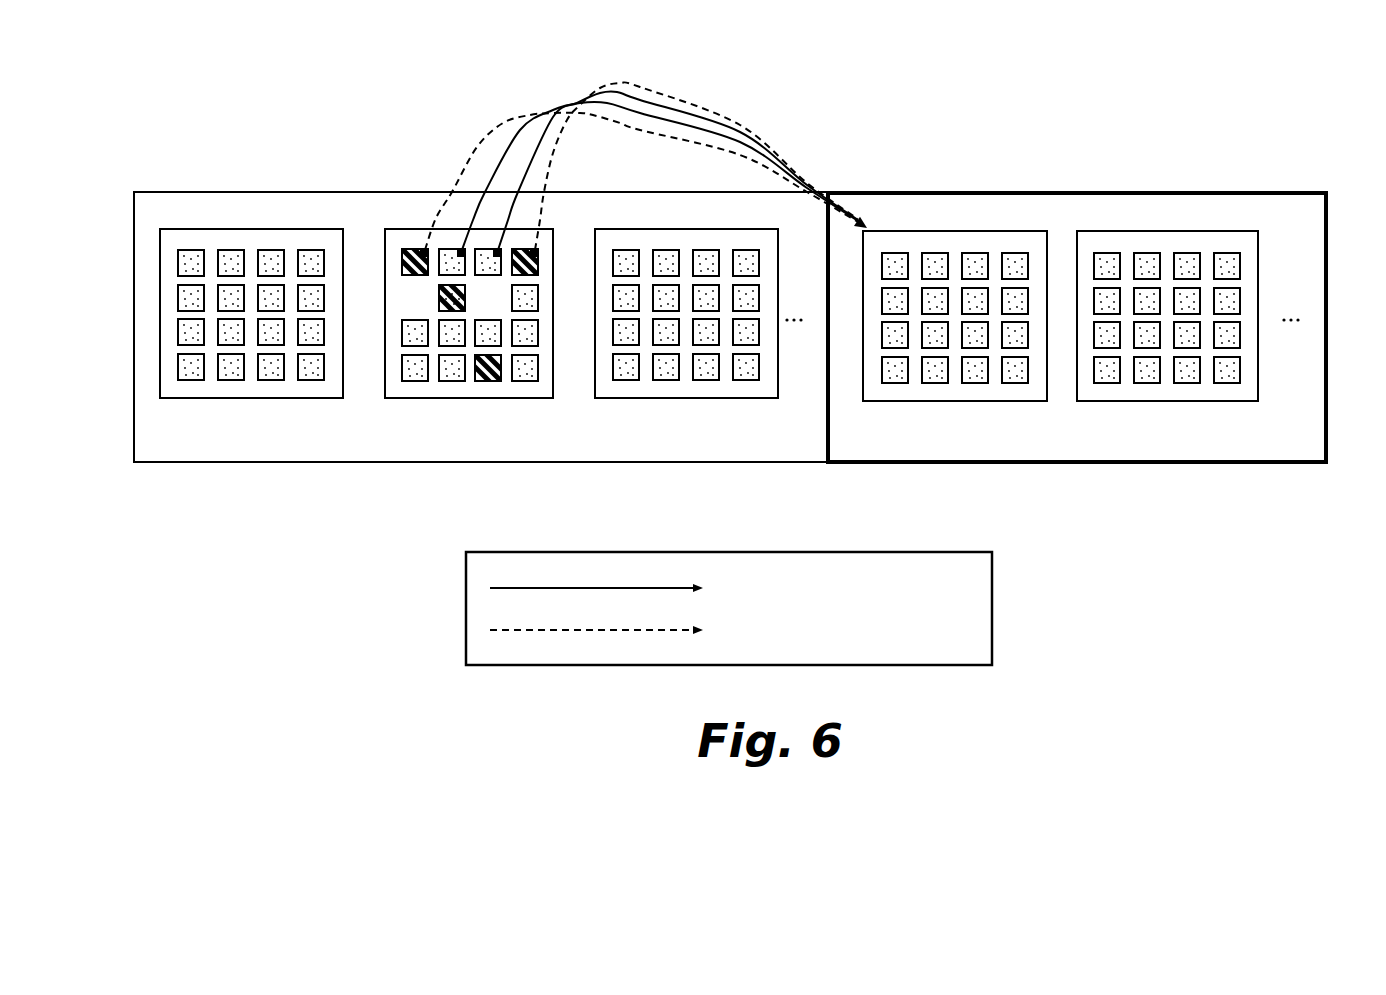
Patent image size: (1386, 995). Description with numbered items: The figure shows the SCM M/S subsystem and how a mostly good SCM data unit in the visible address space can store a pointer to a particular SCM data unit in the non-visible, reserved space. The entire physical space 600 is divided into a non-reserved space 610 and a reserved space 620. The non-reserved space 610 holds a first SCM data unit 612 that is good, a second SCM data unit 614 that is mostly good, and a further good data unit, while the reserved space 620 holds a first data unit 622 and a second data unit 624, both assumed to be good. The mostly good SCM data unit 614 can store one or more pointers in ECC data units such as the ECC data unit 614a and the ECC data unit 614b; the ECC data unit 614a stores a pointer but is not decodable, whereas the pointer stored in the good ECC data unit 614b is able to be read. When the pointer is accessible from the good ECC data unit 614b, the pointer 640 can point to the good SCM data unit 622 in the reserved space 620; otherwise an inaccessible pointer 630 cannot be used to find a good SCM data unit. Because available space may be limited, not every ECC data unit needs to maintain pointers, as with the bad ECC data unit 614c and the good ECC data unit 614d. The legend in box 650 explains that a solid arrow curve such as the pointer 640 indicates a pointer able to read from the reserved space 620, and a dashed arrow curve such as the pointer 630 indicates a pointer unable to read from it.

The entire physical space 600 is at (1097, 114).
The non-reserved space 610 is at (737, 485).
The first SCM data unit in the non-reserved space 612 is at (187, 397).
The second SCM data unit in the non-reserved space 614 is at (383, 374).
The ECC data unit 614a is at (418, 246).
The ECC data unit 614b is at (452, 246).
The bad ECC data unit 614c is at (490, 381).
The good ECC data unit 614d is at (525, 381).
The reserved space 620 is at (967, 484).
The first data unit in the reserved space 622 is at (952, 231).
The second data unit in the reserved space 624 is at (1170, 232).
The inaccessible pointer 630 is at (652, 133).
The pointer 640 is at (712, 142).
The legend box 650 is at (992, 608).